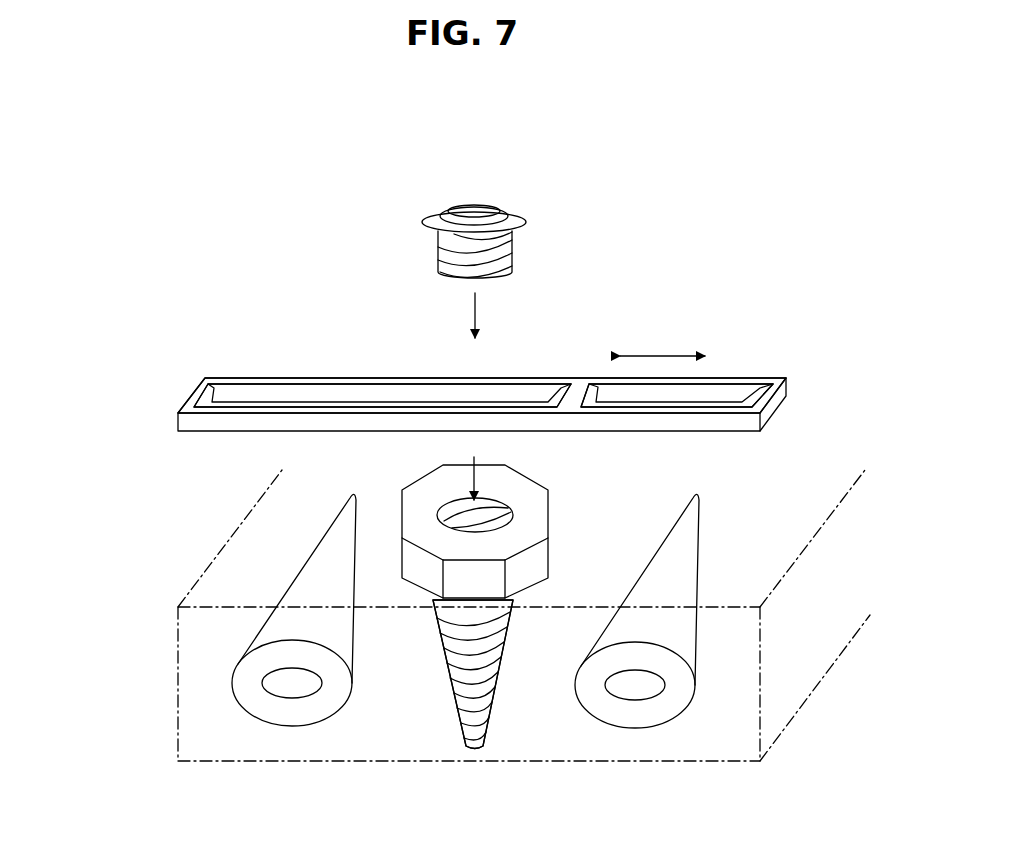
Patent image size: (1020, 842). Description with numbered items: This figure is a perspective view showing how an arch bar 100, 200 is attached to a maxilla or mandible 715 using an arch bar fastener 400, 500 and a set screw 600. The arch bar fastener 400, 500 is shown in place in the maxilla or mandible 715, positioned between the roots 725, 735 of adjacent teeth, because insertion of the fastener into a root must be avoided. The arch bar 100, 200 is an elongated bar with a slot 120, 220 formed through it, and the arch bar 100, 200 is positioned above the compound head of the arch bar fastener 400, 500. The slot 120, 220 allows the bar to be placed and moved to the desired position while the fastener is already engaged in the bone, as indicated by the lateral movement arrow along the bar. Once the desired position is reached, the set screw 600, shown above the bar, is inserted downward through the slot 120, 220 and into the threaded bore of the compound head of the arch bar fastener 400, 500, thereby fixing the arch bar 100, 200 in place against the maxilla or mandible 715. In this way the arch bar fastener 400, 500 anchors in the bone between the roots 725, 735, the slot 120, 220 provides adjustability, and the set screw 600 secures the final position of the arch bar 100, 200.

The set screw 600 is at (422, 201).
The arch bar 100 is at (178, 410).
The arch bar 200 is at (482, 395).
The slot 120 is at (292, 390).
The slot 220 is at (483, 395).
The maxilla or mandible 715 is at (195, 635).
The arch bar fastener 400 is at (490, 577).
The arch bar fastener 500 is at (473, 674).
The root 725 is at (293, 716).
The root 735 is at (642, 716).